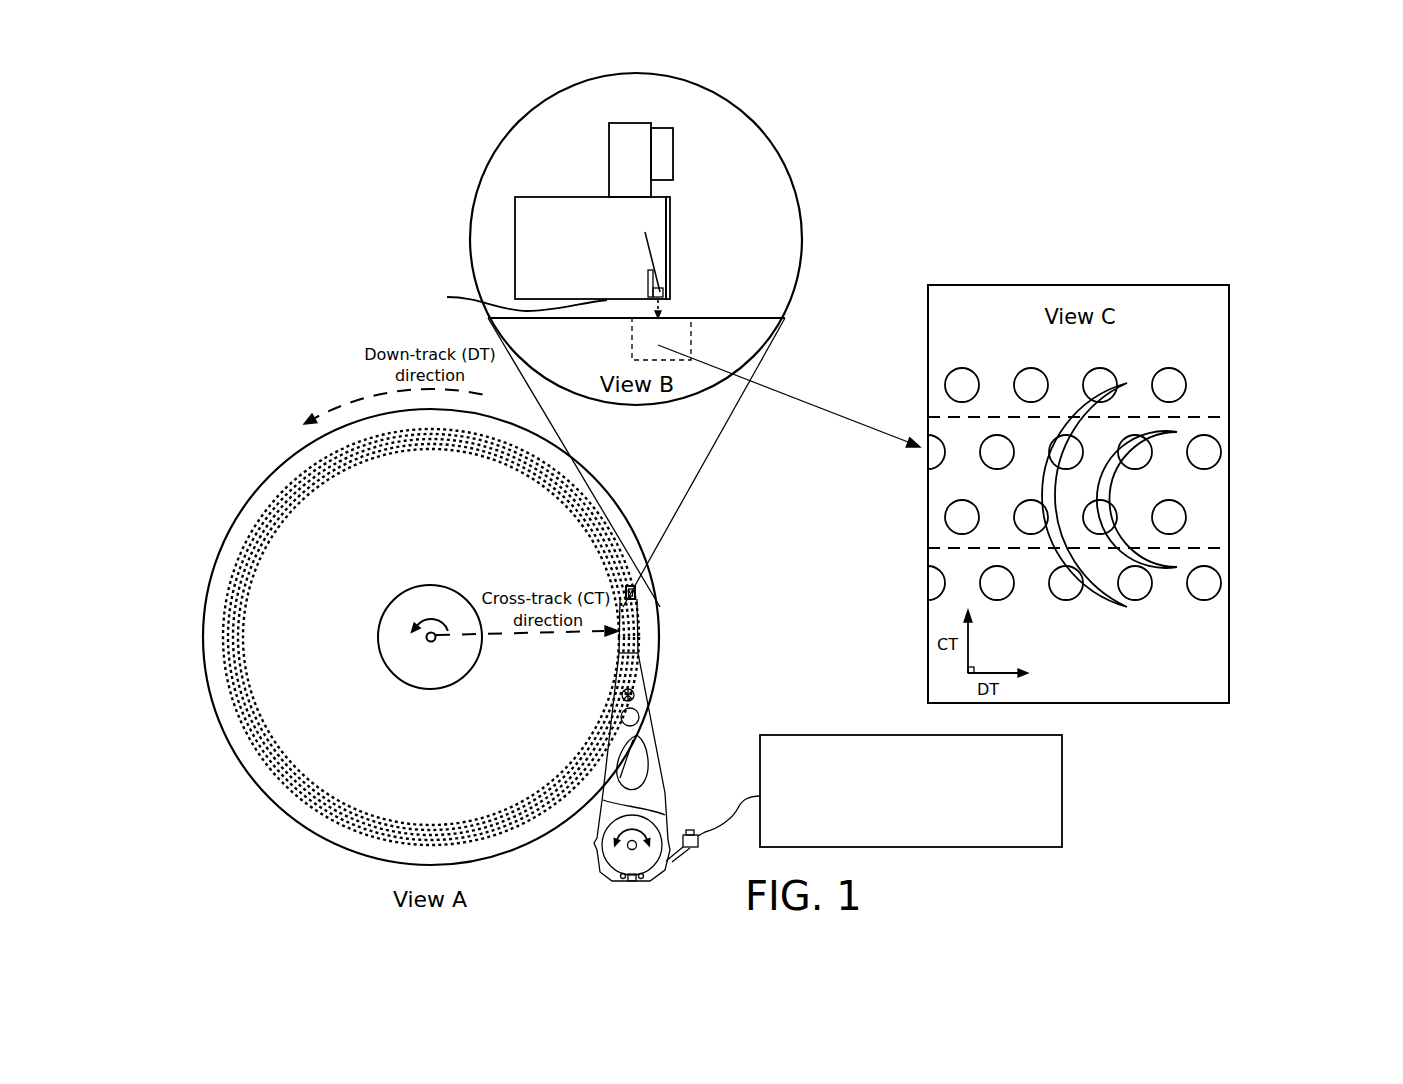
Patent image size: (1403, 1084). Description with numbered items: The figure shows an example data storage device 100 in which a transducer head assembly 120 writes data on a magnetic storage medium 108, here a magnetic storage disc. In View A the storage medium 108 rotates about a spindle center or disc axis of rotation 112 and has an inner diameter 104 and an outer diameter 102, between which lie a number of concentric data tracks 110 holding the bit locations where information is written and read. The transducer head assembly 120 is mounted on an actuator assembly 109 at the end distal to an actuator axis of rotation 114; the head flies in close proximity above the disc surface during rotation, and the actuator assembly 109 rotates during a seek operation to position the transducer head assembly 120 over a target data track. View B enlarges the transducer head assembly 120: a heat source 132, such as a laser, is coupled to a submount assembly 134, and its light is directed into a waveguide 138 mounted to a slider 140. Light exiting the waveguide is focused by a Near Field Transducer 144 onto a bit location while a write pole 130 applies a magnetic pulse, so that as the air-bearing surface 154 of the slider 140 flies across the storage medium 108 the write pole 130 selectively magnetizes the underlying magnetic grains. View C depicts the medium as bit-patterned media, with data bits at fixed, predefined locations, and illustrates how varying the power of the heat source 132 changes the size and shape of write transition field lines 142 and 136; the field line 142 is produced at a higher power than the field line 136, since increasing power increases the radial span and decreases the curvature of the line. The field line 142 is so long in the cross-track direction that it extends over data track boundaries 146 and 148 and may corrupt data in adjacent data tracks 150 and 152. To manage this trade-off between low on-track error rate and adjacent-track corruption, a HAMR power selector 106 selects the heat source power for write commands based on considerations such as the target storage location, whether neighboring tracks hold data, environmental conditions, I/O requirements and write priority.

The data storage device 100 is at (303, 160).
The outer diameter 102 is at (273, 473).
The inner diameter 104 is at (379, 647).
The HAMR power selector 106 is at (897, 814).
The magnetic storage medium 108 is at (278, 808).
The actuator assembly 109 is at (652, 733).
The concentric data tracks 110 is at (258, 757).
The disc axis of rotation 112 is at (411, 632).
The actuator axis of rotation 114 is at (632, 846).
The transducer head assembly 120 is at (640, 594).
The write pole 130 is at (648, 290).
The heat source 132 is at (673, 150).
The submount assembly 134 is at (609, 158).
The write transition field line 136 is at (1180, 430).
The waveguide 138 is at (673, 247).
The slider 140 is at (575, 197).
The write transition field line 142 is at (1073, 405).
The Near Field Transducer 144 is at (645, 232).
The data track boundary 146 is at (1007, 417).
The data track boundary 148 is at (988, 548).
The adjacent data track 150 is at (1224, 376).
The adjacent data track 152 is at (1231, 565).
The air-bearing surface 154 is at (505, 301).